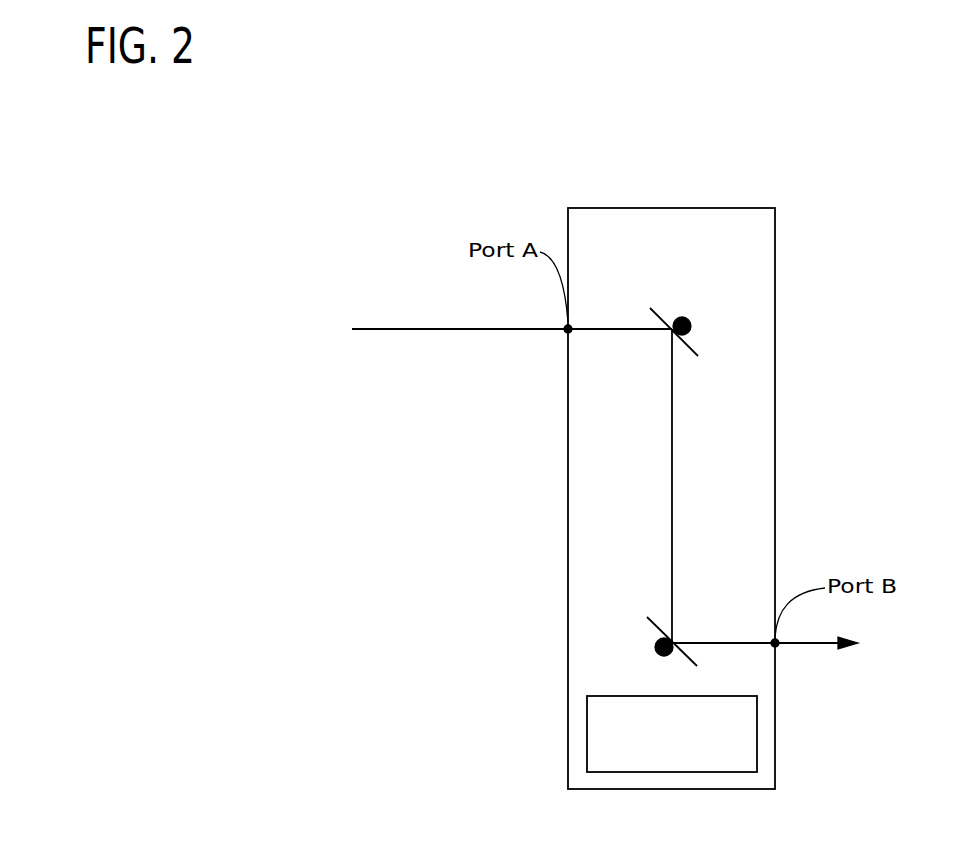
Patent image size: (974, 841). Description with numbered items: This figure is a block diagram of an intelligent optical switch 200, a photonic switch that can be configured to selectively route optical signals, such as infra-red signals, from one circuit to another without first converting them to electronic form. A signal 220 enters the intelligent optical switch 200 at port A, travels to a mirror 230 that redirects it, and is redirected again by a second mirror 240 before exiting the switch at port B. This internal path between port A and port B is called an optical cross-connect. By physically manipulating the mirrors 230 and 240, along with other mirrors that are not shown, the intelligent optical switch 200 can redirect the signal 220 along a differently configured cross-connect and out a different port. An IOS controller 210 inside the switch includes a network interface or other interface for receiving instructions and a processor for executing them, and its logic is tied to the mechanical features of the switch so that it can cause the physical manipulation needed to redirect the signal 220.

The intelligent optical switch 200 is at (664, 461).
The IOS controller 210 is at (672, 734).
The signal 220 is at (466, 329).
The mirror 230 is at (686, 315).
The mirror 240 is at (660, 640).